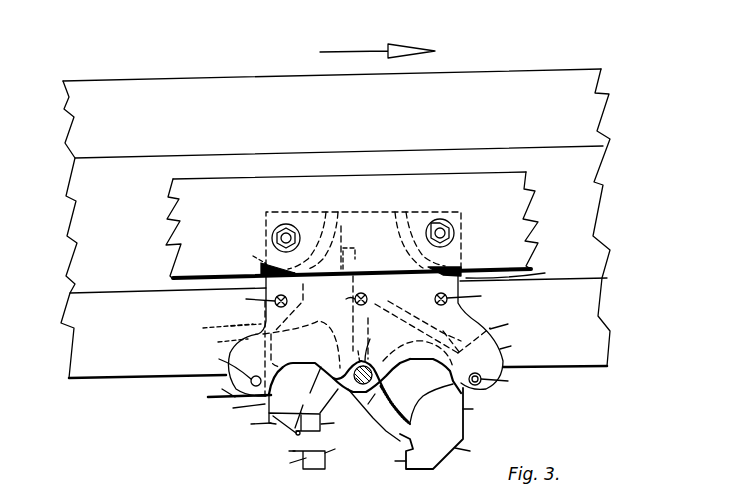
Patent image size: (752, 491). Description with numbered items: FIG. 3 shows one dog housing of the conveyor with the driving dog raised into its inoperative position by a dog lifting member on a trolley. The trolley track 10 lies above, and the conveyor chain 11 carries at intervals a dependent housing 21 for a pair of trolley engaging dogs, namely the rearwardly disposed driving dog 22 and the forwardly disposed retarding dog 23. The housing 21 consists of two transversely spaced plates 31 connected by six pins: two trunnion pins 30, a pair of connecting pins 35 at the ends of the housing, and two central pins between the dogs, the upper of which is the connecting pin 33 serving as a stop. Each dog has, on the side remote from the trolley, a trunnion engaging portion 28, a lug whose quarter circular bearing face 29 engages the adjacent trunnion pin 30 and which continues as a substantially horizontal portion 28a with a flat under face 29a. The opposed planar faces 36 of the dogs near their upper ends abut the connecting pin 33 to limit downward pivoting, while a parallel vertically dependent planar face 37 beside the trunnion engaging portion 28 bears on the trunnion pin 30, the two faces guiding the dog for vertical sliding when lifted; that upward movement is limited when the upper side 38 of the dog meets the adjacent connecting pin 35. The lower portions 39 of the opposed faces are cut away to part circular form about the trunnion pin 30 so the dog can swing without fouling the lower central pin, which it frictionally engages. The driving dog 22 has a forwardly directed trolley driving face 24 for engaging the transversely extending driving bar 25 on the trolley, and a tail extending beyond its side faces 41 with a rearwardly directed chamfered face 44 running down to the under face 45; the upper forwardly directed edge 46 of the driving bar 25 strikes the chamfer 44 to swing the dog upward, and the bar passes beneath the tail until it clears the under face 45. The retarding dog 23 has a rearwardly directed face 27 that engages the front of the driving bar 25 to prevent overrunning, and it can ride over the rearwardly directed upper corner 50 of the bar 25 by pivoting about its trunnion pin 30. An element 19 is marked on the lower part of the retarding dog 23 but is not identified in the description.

The trolley track 10 is at (335, 223).
The conveyor chain 11 is at (352, 225).
The lower arm 19 is at (472, 451).
The housing 21 is at (416, 270).
The driving dog 22 is at (310, 388).
The retarding dog 23 is at (451, 428).
The trolley driving face 24 is at (313, 424).
The driving bar 25 is at (295, 463).
The rearwardly directed face 27 is at (388, 466).
The trunnion engaging portion 28 is at (369, 304).
The substantially horizontal portion 28a is at (211, 326).
The bearing face 29 is at (495, 330).
The under face 29a is at (227, 336).
The trunnion pin 30 is at (361, 370).
The plates 31 is at (394, 378).
The connecting pin 33 is at (344, 298).
The connecting pins 35 is at (361, 299).
The opposed faces 36 is at (362, 295).
The vertically dependent planar face 37 is at (235, 391).
The upper side 38 is at (248, 259).
The part circular faces 39 is at (359, 391).
The side faces 41 is at (435, 391).
The chamfered face 44 is at (243, 427).
The under face 45 is at (305, 397).
The upper forwardly directed edge 46 is at (341, 450).
The rearwardly directed upper corner 50 is at (280, 448).